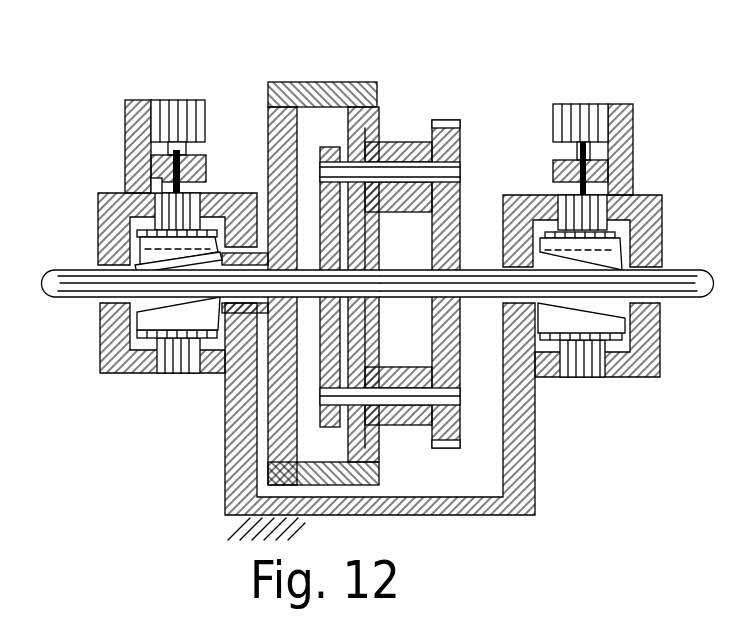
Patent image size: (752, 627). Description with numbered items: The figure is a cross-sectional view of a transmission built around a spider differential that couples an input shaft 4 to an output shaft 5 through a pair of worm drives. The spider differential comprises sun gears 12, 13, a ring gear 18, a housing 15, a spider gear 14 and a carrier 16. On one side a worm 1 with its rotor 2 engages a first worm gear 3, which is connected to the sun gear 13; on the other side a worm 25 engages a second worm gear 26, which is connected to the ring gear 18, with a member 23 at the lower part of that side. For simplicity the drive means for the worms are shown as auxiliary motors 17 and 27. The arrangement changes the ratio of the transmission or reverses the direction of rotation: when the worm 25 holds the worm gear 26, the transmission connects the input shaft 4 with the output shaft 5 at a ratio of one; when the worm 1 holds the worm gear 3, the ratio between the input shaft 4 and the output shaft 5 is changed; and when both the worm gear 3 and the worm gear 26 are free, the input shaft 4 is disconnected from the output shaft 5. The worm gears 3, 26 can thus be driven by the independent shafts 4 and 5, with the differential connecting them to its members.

The worm 1 is at (600, 245).
The rotor 2 is at (575, 320).
The first worm gear 3 is at (652, 365).
The input shaft 4 is at (102, 278).
The output shaft 5 is at (660, 278).
The sun gear 12 is at (365, 205).
The sun gear 13 is at (452, 237).
The spider gear 14 is at (383, 150).
The housing 15 is at (240, 455).
The carrier 16 is at (328, 220).
The auxiliary motor 17 is at (582, 120).
The ring gear 18 is at (343, 84).
The bearing housing 23 is at (112, 360).
The worm 25 is at (160, 245).
The second worm gear 26 is at (192, 318).
The auxiliary motor 27 is at (160, 118).